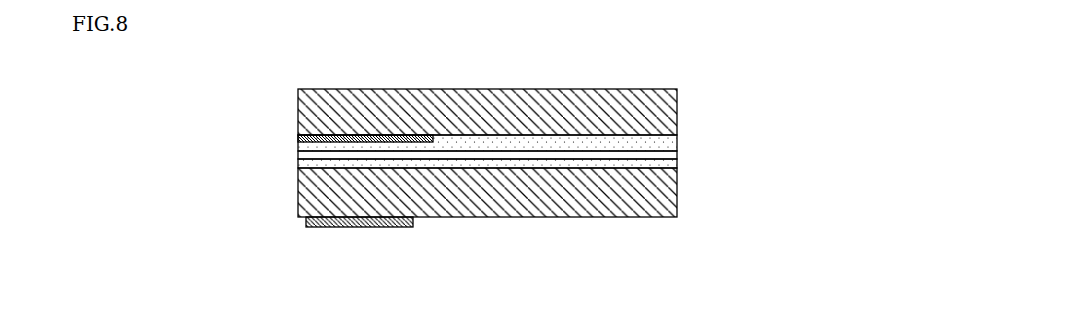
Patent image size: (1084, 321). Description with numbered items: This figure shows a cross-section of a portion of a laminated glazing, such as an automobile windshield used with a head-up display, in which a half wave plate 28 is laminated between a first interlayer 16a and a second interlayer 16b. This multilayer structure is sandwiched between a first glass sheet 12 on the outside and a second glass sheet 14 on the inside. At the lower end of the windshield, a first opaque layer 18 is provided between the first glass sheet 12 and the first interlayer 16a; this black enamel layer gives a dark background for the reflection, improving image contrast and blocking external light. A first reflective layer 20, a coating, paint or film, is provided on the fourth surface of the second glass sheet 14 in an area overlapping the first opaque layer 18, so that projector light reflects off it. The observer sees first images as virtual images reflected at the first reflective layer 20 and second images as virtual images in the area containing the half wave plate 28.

The first glass sheet 12 is at (673, 110).
The second glass sheet 14 is at (667, 193).
The first interlayer 16a is at (667, 145).
The second interlayer 16b is at (666, 165).
The first opaque layer 18 is at (361, 138).
The first reflective layer 20 is at (362, 228).
The half wave plate 28 is at (552, 153).